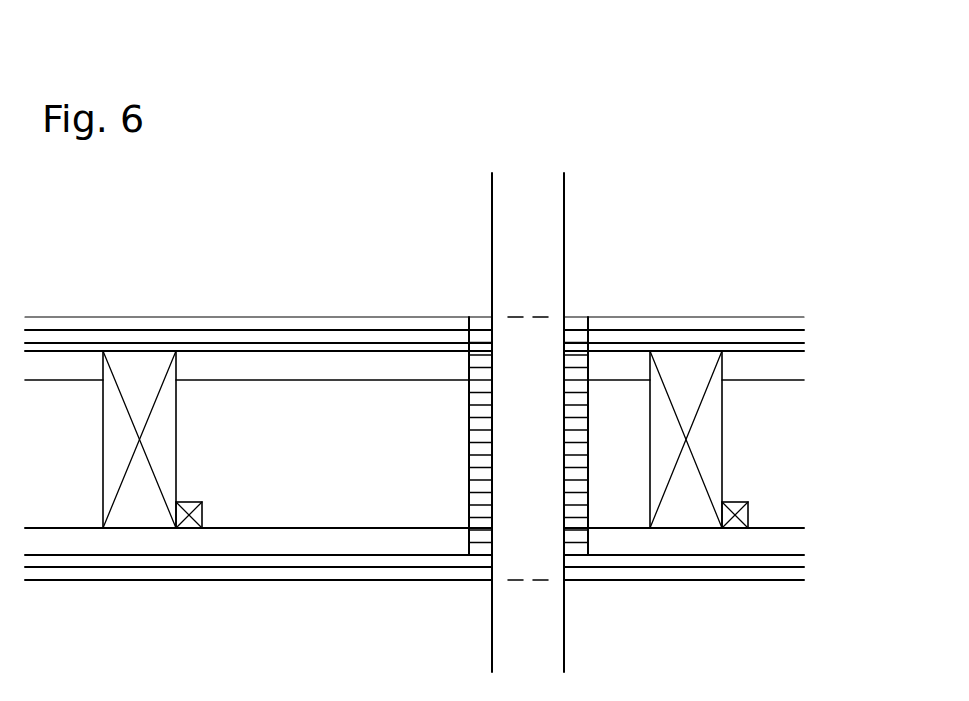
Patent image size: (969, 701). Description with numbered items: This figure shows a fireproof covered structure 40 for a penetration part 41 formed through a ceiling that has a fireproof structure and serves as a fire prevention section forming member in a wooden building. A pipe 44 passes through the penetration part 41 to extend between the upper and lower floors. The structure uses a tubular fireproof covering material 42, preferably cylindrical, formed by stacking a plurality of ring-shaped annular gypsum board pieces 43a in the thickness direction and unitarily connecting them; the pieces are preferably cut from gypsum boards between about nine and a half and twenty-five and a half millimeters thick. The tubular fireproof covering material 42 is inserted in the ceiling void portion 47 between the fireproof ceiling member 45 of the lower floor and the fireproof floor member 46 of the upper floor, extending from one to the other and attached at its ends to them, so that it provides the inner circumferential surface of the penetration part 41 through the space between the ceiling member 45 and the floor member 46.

The fireproof covered structure 40 is at (627, 203).
The penetration part 41 is at (552, 323).
The tubular fireproof covering material 42 is at (478, 313).
The annular gypsum board pieces 43a is at (467, 412).
The pipe 44 is at (566, 240).
The ceiling member 45 is at (272, 574).
The floor member 46 is at (290, 323).
The ceiling void portion 47 is at (310, 467).